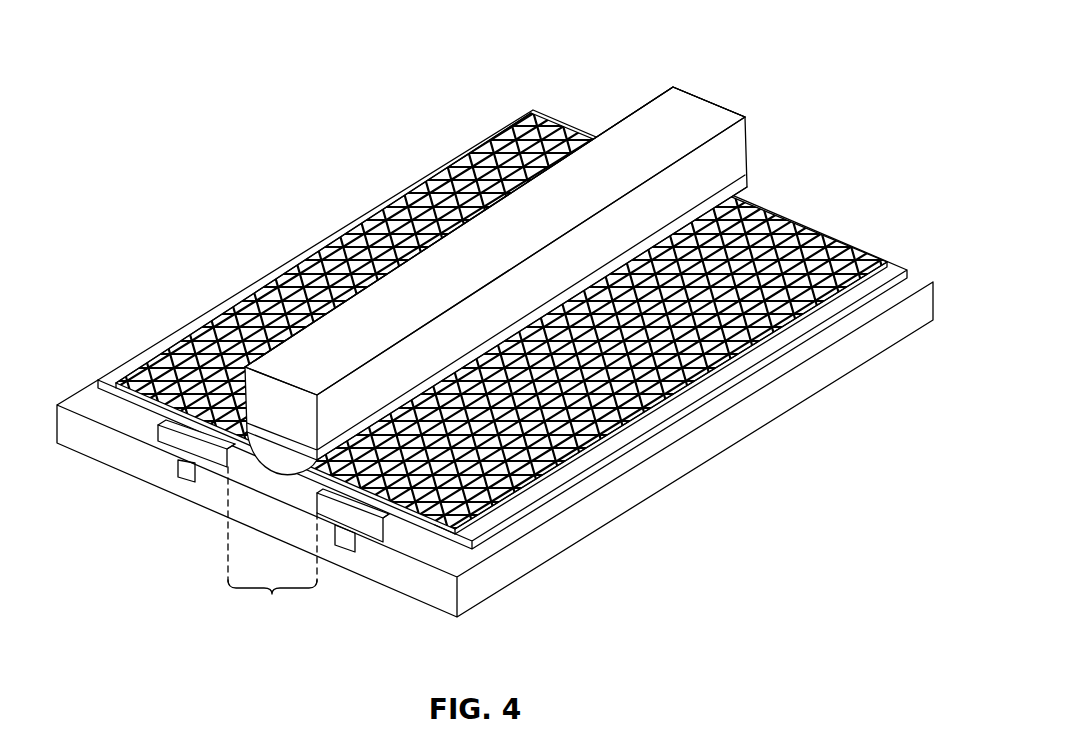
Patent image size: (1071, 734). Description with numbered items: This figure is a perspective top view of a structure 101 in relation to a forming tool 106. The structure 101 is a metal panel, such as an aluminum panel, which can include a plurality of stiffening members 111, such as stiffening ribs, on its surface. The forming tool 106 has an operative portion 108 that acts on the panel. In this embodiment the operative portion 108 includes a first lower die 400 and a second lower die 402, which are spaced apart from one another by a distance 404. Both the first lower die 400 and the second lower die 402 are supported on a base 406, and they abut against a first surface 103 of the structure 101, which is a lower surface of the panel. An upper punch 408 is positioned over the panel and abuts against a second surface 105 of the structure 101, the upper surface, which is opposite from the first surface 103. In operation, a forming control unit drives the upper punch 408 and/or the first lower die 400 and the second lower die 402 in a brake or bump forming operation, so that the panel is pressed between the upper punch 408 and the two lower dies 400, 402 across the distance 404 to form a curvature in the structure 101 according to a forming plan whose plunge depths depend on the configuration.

The structure 101 is at (792, 206).
The first surface 103 is at (435, 525).
The second surface 105 is at (148, 368).
The forming tool 106 is at (738, 92).
The operative portion 108 is at (660, 92).
The stiffening members 111 is at (531, 112).
The first lower die 400 is at (180, 452).
The second lower die 402 is at (365, 530).
The distance 404 is at (272, 547).
The base 406 is at (500, 577).
The upper punch 408 is at (345, 355).